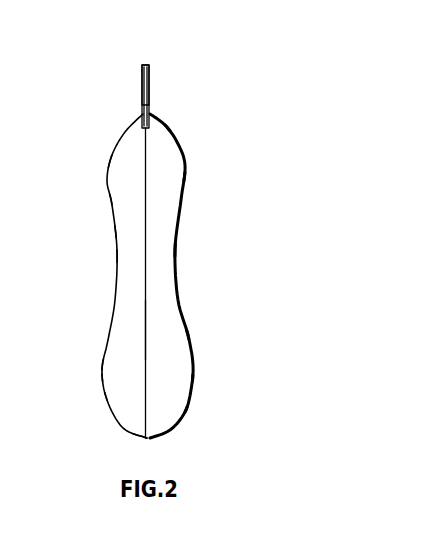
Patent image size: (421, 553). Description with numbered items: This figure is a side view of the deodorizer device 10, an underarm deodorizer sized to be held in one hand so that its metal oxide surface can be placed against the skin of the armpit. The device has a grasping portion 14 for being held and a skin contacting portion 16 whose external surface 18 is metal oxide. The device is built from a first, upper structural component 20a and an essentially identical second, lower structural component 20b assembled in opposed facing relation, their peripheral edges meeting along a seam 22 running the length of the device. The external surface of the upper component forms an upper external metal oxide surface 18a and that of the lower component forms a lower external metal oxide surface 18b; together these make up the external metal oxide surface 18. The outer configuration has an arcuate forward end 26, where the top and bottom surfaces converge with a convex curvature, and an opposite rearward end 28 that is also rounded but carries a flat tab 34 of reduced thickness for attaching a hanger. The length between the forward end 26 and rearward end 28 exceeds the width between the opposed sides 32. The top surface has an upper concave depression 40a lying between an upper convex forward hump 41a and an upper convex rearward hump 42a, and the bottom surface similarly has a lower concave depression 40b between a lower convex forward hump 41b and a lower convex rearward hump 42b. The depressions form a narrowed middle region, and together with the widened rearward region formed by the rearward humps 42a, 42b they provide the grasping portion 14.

The deodorizer device 10 is at (284, 206).
The grasping portion 14 is at (116, 255).
The skin contacting portion 16 is at (194, 333).
The external surface of metal oxide 18 is at (108, 396).
The upper external metal oxide surface 18a is at (103, 363).
The lower external metal oxide surface 18b is at (168, 127).
The first structural component 20a is at (105, 198).
The second structural component 20b is at (188, 409).
The seam 22 is at (142, 335).
The forward end 26 is at (133, 437).
The rearward end 28 is at (142, 103).
The opposed sides 32 is at (152, 290).
The flat tab 34 is at (148, 97).
The upper concave depression 40a is at (114, 232).
The lower concave depression 40b is at (178, 247).
The upper convex forward hump 41a is at (113, 373).
The lower convex forward hump 41b is at (192, 378).
The upper convex rearward hump 42a is at (114, 160).
The lower convex rearward hump 42b is at (183, 175).